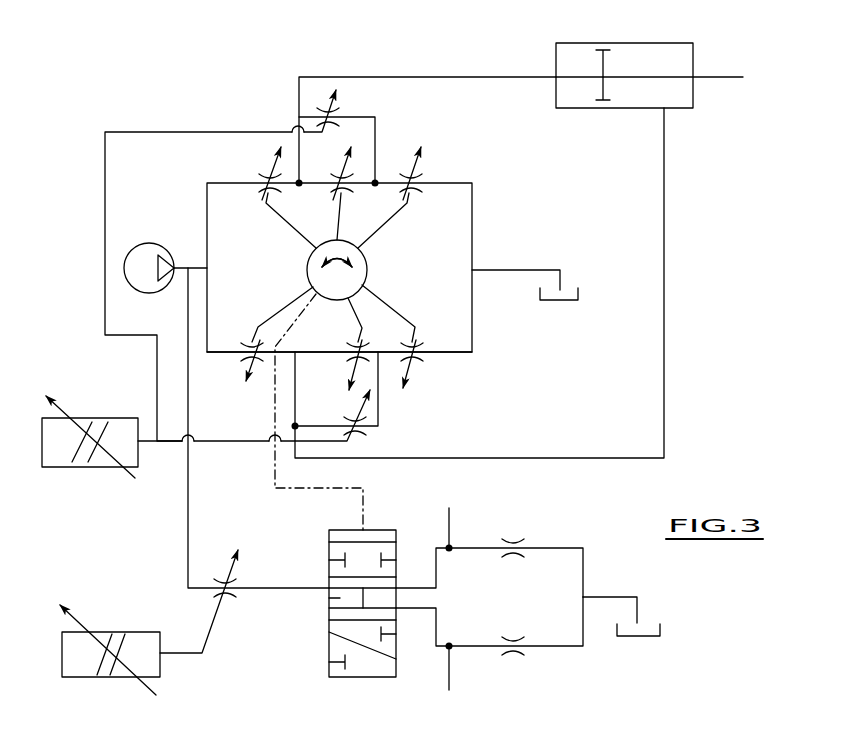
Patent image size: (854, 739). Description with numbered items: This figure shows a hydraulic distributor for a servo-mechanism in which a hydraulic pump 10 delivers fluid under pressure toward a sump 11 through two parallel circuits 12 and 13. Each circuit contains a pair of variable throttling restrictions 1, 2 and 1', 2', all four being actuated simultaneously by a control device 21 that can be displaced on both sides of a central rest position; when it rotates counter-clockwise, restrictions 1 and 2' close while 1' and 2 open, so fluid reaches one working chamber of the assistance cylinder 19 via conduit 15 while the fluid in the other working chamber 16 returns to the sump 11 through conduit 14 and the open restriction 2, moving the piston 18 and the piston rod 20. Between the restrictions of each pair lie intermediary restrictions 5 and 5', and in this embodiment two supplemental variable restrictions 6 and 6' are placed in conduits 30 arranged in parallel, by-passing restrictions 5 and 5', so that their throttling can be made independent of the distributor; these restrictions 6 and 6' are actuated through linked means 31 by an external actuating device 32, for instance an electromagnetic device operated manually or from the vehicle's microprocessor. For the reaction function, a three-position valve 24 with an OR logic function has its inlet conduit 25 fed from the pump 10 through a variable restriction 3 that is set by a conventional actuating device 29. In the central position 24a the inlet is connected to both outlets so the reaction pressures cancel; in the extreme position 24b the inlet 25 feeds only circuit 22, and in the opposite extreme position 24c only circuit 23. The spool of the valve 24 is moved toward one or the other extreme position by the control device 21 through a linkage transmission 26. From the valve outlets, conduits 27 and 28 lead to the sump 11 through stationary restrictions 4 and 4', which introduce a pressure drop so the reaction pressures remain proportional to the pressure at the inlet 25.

The variable throttling restriction 1 is at (269, 173).
The variable throttling restriction 2 is at (421, 173).
The variable restriction 3 is at (208, 601).
The stationary restriction 4 is at (513, 536).
The stationary restriction 4' is at (513, 658).
The intermediary restriction 5 is at (340, 173).
The supplemental variable restriction 6 is at (331, 109).
The variable throttling restriction 1' is at (241, 364).
The variable throttling restriction 2' is at (416, 366).
The intermediary restriction 5' is at (345, 366).
The supplemental variable restriction 6' is at (325, 415).
The hydraulic pump 10 is at (141, 256).
The sump 11 is at (583, 456).
The circuit 12 is at (472, 215).
The circuit 13 is at (472, 320).
The conduit 14 is at (299, 92).
The conduit 15 is at (665, 245).
The working chamber 16 is at (570, 85).
The piston 18 is at (601, 56).
The assistance device or cylinder 19 is at (648, 43).
The piston rod 20 is at (710, 78).
The control device 21 is at (355, 283).
The circuit 22 is at (461, 520).
The circuit 23 is at (461, 677).
The three-position valve 24 is at (329, 622).
The central position 24a is at (335, 598).
The extreme position 24b is at (333, 556).
The opposite extreme position 24c is at (335, 648).
The inlet conduit 25 is at (272, 590).
The linkage transmission 26 is at (273, 394).
The conduit 27 is at (565, 548).
The conduit 28 is at (565, 646).
The actuating device 29 is at (110, 654).
The conduit 30 is at (376, 130).
The linked means 31 is at (176, 131).
The external actuating device 32 is at (112, 446).